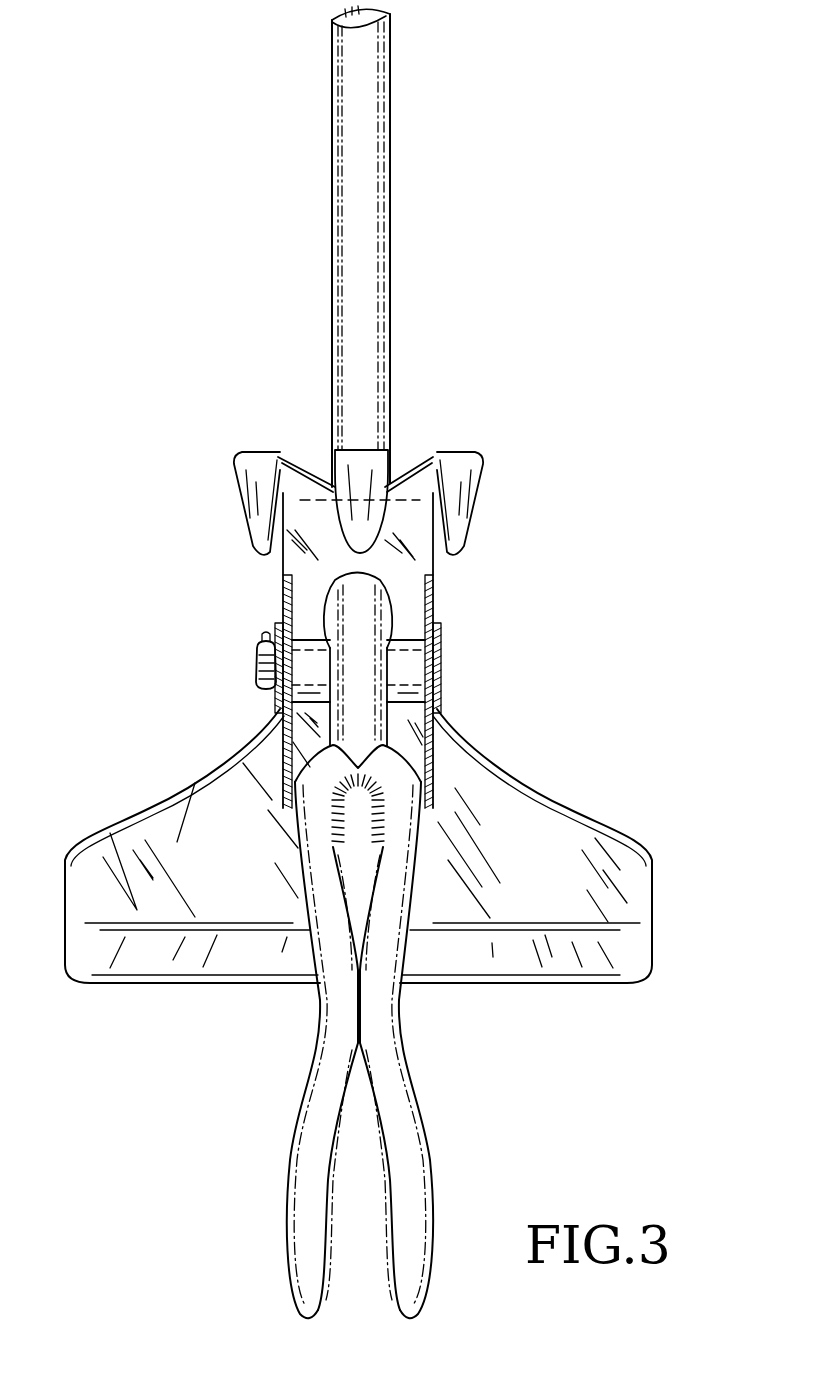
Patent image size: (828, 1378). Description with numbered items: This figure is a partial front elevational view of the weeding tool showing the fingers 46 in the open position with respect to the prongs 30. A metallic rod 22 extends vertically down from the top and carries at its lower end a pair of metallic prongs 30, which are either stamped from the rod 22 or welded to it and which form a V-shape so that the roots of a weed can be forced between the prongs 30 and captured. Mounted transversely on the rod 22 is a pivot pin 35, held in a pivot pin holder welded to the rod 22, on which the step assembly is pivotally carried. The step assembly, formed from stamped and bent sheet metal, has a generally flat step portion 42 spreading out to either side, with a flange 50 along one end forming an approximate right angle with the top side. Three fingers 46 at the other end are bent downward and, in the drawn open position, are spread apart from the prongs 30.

The pole 22 is at (390, 78).
The handle 30 is at (293, 1263).
The bolt 35 is at (441, 683).
The plate 42 is at (592, 803).
The tabs 46 is at (356, 478).
The bottom lip 50 is at (588, 982).